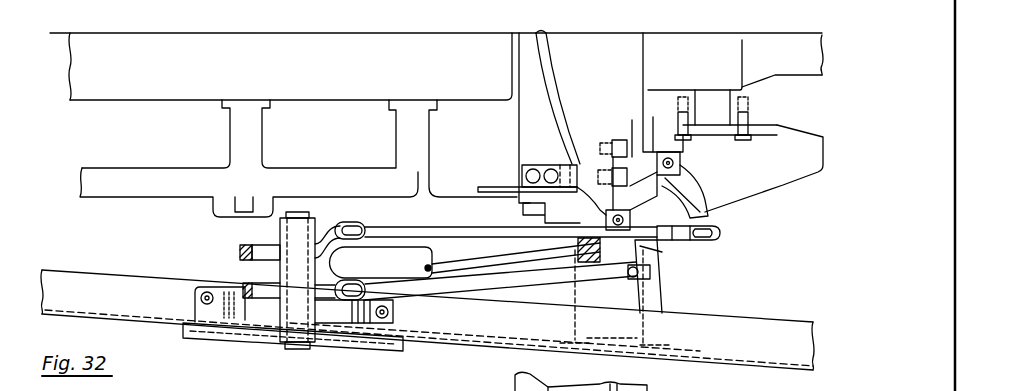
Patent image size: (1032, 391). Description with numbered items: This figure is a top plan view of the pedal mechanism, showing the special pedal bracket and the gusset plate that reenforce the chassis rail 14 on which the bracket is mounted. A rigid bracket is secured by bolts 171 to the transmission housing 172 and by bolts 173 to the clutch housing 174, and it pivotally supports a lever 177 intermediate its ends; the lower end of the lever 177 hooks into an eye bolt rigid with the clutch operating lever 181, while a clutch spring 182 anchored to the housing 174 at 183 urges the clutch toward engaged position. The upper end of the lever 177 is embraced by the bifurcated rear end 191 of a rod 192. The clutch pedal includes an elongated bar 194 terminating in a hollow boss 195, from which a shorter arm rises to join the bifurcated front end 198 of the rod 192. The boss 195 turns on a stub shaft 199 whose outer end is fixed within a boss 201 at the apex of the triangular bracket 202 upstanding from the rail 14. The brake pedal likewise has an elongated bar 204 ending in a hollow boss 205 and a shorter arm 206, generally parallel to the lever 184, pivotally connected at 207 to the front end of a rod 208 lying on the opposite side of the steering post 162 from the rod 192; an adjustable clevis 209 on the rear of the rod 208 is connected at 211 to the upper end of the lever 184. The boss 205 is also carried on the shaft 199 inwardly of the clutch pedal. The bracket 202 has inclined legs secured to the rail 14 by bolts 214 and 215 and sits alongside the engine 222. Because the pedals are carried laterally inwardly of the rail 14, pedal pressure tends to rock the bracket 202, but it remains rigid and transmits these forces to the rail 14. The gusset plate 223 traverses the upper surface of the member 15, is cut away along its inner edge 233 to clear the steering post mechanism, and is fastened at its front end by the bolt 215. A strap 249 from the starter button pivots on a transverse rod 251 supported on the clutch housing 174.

The chassis rail 14 is at (97, 287).
The member 15 is at (652, 252).
The steering post 162 is at (428, 263).
The bolts 171 is at (748, 140).
The transmission housing 172 is at (707, 63).
The bolts 173 is at (629, 123).
The clutch housing 174 is at (597, 68).
The lever 177 is at (661, 272).
The clutch operating lever 181 is at (602, 176).
The clutch spring 182 is at (576, 249).
The anchor point 183 is at (530, 223).
The lever 184 is at (706, 215).
The bifurcated rear end 191 is at (630, 279).
The rod 192 is at (457, 286).
The elongated bar 194 is at (243, 285).
The hollow boss 195 is at (283, 283).
The bifurcated front end 198 is at (354, 311).
The stub shaft 199 is at (302, 212).
The boss 201 is at (300, 349).
The triangular bracket 202 is at (248, 340).
The elongated bar 204 is at (226, 251).
The hollow boss 205 is at (280, 235).
The shorter arm 206 is at (349, 223).
The pivot connection 207 is at (365, 226).
The rod 208 is at (436, 227).
The adjustable clevis 209 is at (690, 241).
The pivot connection 211 is at (719, 236).
The bolt 214 is at (196, 297).
The bolt 215 is at (389, 312).
The engine 222 is at (355, 100).
The gusset plate 223 is at (548, 296).
The inner edge 233 is at (482, 263).
The strap 249 is at (482, 187).
The transverse rod 251 is at (558, 130).